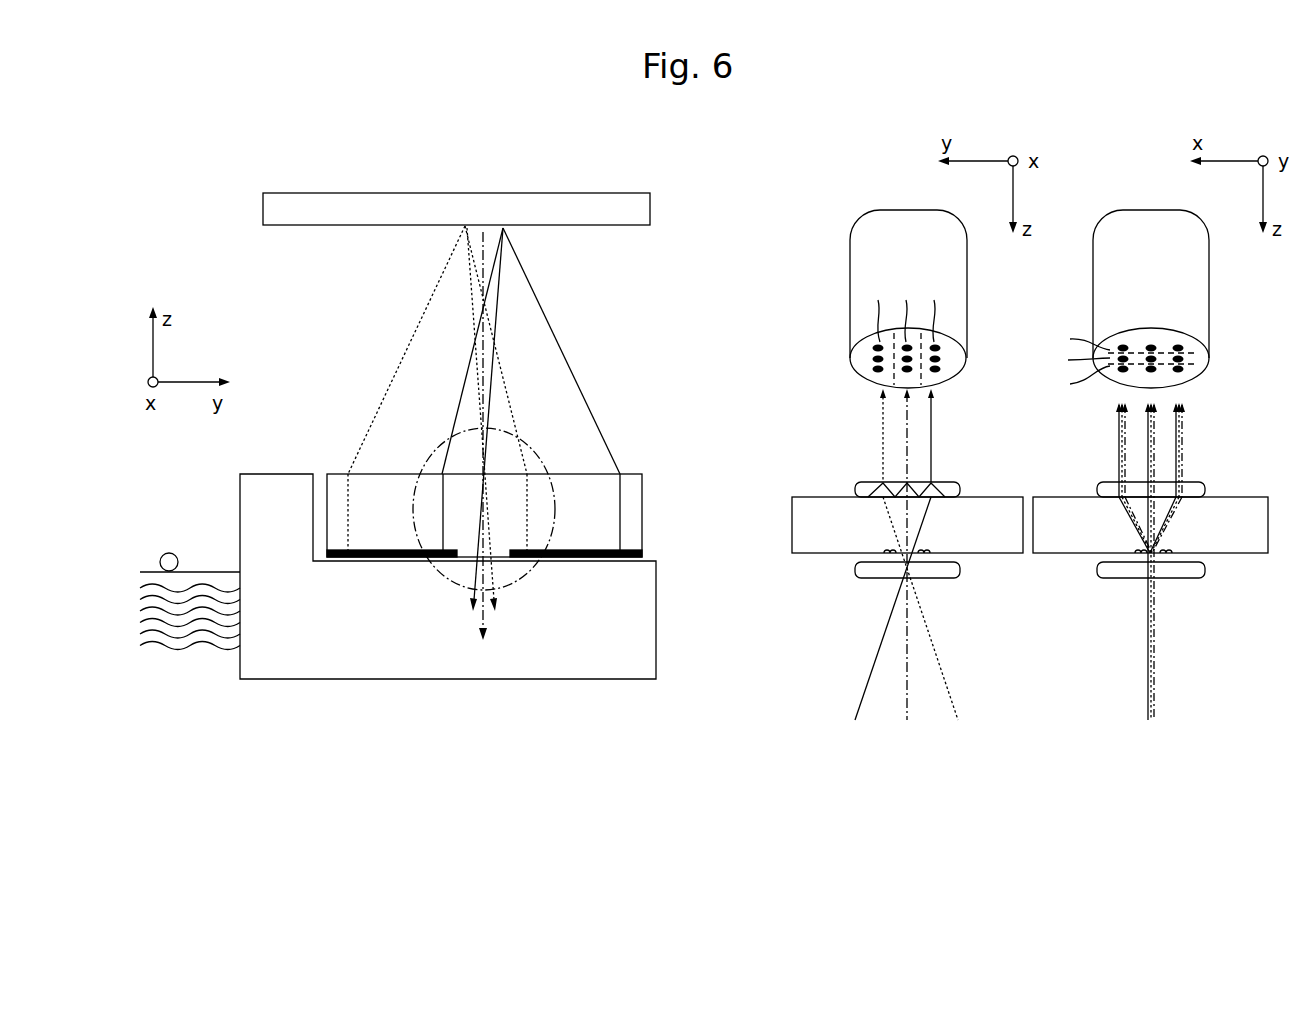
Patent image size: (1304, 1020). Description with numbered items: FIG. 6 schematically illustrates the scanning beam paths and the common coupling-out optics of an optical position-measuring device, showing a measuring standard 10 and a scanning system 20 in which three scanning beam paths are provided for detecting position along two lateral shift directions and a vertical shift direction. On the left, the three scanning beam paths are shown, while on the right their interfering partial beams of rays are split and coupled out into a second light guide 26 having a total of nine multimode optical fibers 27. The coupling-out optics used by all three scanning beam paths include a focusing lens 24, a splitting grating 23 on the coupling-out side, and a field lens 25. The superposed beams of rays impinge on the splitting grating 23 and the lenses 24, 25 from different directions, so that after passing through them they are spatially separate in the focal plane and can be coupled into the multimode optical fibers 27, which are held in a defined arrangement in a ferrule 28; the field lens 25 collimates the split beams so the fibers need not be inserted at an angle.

The measuring standard 10 is at (240, 212).
The scanning system 20 is at (240, 700).
The splitting grating 23 is at (900, 550).
The focusing lens 24 is at (945, 577).
The field lens 25 is at (948, 481).
The second light guide 26 is at (1030, 304).
The multimode optical fibers 27 is at (858, 364).
The ferrule 28 is at (955, 285).